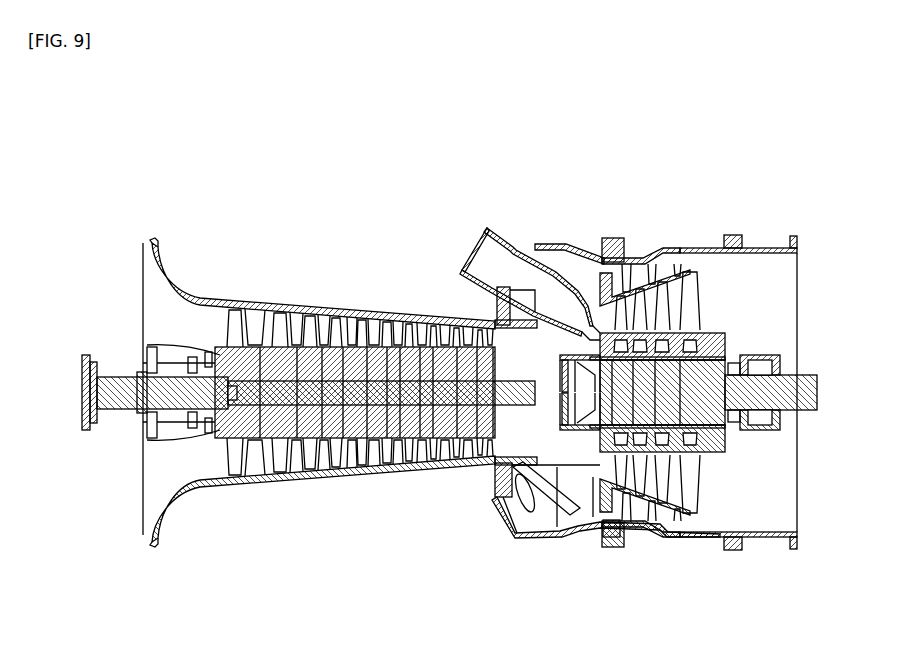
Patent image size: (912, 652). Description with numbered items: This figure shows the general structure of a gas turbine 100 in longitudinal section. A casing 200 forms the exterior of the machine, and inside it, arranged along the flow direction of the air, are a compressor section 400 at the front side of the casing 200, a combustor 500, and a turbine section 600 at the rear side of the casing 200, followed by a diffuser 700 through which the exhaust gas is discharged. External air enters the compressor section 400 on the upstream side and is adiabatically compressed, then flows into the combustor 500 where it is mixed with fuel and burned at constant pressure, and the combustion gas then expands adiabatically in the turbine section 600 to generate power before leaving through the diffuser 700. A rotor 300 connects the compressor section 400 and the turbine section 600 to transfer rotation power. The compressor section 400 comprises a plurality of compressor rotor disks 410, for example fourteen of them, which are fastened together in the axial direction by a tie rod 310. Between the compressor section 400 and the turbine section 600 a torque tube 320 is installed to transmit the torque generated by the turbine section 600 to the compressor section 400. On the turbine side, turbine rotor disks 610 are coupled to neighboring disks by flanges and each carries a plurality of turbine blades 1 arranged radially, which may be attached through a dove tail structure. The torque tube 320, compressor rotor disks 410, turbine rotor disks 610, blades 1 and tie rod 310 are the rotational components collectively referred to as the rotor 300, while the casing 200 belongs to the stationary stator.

The gas turbine 100 is at (160, 151).
The casing 200 is at (185, 296).
The rotor 300 is at (68, 358).
The tie rod 310 is at (215, 430).
The torque tube 320 is at (523, 433).
The compressor section 400 is at (266, 286).
The compressor rotor disks 410 is at (265, 427).
The turbine blades 1 is at (280, 457).
The combustor 500 is at (498, 221).
The turbine section 600 is at (624, 239).
The turbine rotor disks 610 is at (670, 433).
The diffuser 700 is at (803, 262).